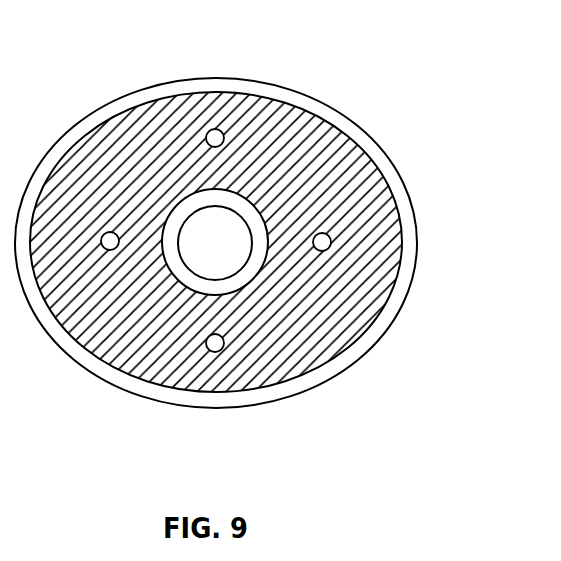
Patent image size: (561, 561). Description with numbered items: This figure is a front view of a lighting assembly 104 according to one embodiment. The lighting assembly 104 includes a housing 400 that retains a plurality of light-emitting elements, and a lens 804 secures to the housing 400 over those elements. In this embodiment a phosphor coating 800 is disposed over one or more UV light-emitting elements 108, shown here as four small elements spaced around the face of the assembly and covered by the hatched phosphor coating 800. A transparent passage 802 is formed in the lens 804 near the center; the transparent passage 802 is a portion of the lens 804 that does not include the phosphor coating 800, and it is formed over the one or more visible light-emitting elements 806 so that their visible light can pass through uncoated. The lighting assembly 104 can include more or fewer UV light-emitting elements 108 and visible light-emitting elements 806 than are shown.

The lighting assembly 104 is at (269, 243).
The UV light-emitting elements 108 is at (322, 233).
The housing 400 is at (269, 243).
The phosphor coating 800 is at (368, 200).
The transparent passage 802 is at (230, 228).
The lens 804 is at (407, 233).
The visible light-emitting elements 806 is at (225, 242).